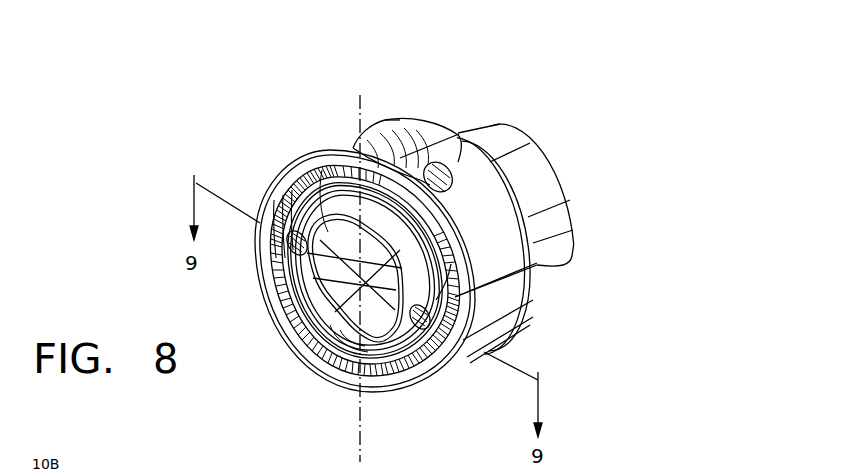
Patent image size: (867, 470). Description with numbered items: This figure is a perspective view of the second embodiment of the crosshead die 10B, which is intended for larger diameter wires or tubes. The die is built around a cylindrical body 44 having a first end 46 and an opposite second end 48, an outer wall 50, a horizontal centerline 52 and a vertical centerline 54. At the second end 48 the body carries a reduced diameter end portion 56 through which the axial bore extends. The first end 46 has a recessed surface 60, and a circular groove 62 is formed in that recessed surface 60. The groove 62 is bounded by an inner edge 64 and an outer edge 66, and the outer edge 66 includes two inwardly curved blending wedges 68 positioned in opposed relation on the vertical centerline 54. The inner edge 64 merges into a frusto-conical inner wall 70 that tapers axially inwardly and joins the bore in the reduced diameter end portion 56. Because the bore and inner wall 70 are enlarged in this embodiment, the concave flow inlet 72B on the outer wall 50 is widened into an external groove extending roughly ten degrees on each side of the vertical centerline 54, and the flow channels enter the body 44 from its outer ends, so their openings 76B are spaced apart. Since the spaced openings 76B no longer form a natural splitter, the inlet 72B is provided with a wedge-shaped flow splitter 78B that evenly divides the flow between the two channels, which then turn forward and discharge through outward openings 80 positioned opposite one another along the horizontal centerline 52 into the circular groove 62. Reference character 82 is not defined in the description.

The crosshead die (second embodiment) 10B is at (637, 173).
The cylindrical body 44 is at (490, 162).
The first end 46 is at (327, 365).
The second end 48 is at (536, 307).
The outer wall 50 is at (500, 218).
The horizontal centerline 52 is at (275, 262).
The vertical centerline 54 is at (358, 118).
The reduced diameter end portion 56 is at (574, 205).
The recessed surface 60 is at (298, 323).
The circular groove 62 is at (463, 347).
The inner edge 64 is at (320, 352).
The outer edge 66 is at (307, 302).
The blending wedges 68 is at (322, 170).
The frusto-conical inner wall 70 is at (410, 370).
The concave flow inlet 72B is at (430, 160).
The openings of the flow channels 76B is at (362, 125).
The wedge-shaped flow splitter 78B is at (390, 135).
The outward openings 80 is at (285, 228).
The slot 82 is at (292, 178).